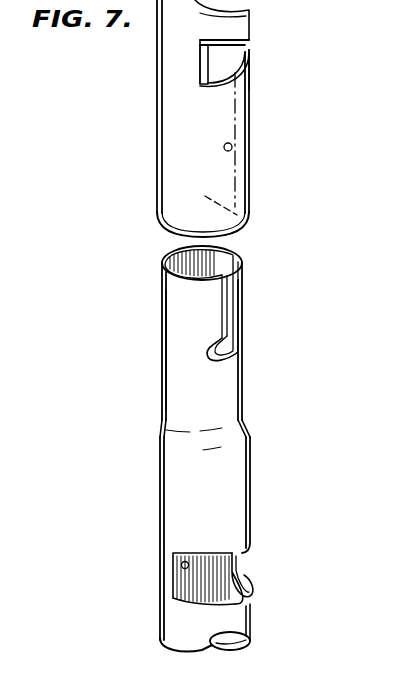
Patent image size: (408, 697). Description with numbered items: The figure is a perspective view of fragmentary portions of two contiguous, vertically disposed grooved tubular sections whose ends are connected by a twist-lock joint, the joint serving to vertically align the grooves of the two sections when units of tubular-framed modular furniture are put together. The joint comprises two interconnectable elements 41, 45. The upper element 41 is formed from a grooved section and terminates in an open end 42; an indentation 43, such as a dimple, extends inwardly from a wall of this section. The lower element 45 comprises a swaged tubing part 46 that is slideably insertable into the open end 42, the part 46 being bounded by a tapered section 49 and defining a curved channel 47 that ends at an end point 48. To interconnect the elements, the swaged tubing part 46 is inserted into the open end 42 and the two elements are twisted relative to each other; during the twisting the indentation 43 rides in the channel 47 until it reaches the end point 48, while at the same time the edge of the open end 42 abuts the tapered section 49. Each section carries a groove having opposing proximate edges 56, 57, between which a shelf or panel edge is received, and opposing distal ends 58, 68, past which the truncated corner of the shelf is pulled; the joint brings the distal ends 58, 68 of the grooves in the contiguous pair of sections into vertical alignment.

The element 41 is at (150, 173).
The open end 42 is at (252, 222).
The indentation 43 is at (233, 146).
The element 45 is at (150, 360).
The swaged tubing part 46 is at (182, 305).
The curved channel 47 is at (242, 306).
The end point 48 is at (244, 363).
The tapered section 49 is at (247, 425).
The proximate edge 56 is at (246, 30).
The proximate edge 57 is at (250, 66).
The distal end 58 is at (200, 67).
The distal end 68 is at (243, 47).